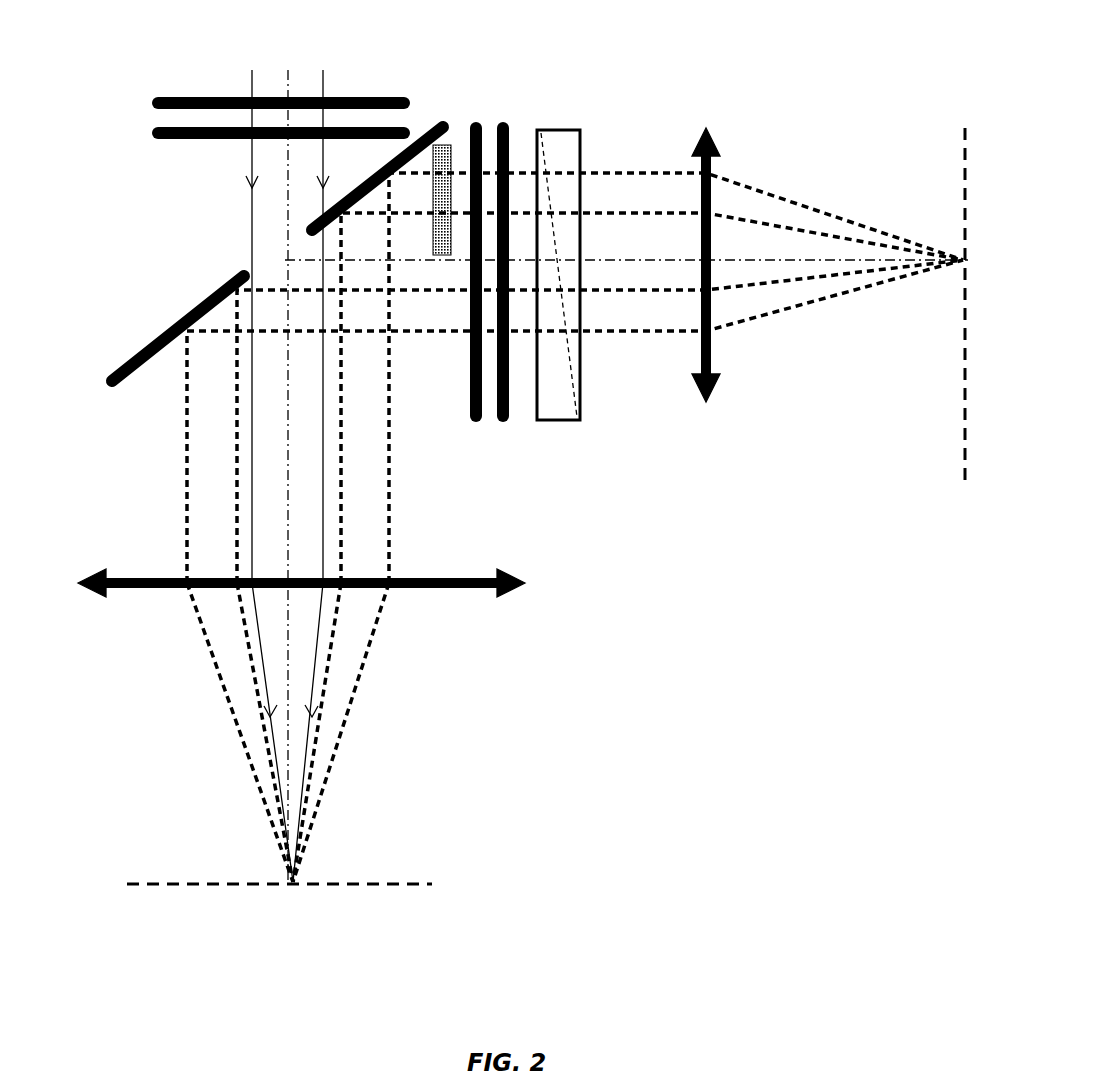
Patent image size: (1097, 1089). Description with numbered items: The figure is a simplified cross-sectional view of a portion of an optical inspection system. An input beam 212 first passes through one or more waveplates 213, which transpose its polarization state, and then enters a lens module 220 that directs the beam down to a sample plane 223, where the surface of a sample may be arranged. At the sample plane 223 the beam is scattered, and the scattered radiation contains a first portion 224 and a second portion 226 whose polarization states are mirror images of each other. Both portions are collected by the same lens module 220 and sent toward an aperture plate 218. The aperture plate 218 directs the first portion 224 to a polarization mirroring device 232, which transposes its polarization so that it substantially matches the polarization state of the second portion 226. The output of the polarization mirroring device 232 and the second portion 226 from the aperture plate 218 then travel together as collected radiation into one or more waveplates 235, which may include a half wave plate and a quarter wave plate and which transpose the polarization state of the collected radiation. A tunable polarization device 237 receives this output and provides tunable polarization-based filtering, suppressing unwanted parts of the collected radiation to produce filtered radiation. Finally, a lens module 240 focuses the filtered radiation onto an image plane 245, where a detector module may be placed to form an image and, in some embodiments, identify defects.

The input beam 212 is at (250, 70).
The waveplates 213 is at (152, 100).
The aperture plate 218 is at (153, 340).
The lens module 220 is at (528, 578).
The sample plane 223 is at (432, 884).
The first portion of scattered radiation 224 is at (343, 725).
The second portion of scattered radiation 226 is at (228, 715).
The polarization mirroring device 232 is at (452, 145).
The waveplates 235 is at (503, 422).
The tunable polarization device 237 is at (578, 130).
The lens module 240 is at (706, 128).
The image plane 245 is at (965, 128).